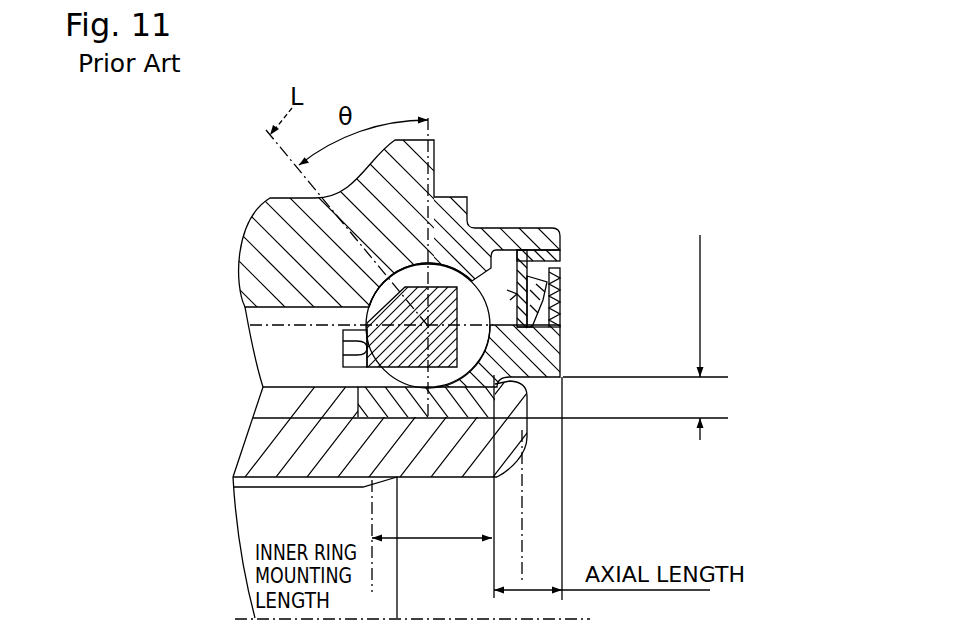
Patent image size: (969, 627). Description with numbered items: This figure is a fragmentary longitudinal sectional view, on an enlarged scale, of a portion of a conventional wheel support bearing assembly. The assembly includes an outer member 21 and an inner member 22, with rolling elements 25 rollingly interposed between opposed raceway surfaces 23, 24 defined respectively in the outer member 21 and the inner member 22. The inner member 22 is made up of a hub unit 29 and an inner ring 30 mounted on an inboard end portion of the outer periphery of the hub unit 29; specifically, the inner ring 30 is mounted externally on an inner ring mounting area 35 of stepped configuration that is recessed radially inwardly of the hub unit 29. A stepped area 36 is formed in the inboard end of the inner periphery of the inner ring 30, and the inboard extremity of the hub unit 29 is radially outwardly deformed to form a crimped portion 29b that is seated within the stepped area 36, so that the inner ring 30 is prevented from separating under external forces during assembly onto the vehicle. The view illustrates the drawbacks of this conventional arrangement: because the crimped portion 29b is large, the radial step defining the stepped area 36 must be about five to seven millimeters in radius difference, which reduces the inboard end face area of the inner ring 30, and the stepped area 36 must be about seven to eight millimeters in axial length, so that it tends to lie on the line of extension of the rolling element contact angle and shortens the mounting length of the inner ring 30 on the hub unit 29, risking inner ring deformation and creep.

The outer member 21 is at (267, 213).
The inner member 22 is at (120, 403).
The raceway surface 23 is at (470, 300).
The raceway surface 24 is at (442, 392).
The rolling elements 25 is at (487, 252).
The hub unit 29 is at (273, 458).
The crimped portion 29b is at (510, 398).
The inner ring 30 is at (358, 411).
The inner ring mounting area 35 is at (466, 373).
The stepped area 36 is at (528, 379).